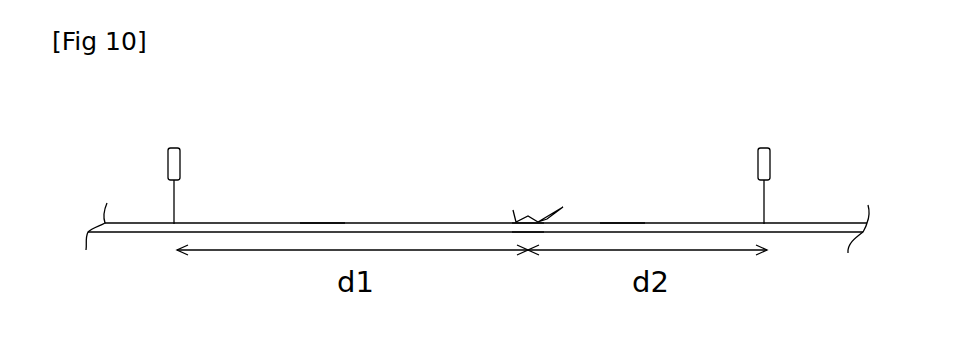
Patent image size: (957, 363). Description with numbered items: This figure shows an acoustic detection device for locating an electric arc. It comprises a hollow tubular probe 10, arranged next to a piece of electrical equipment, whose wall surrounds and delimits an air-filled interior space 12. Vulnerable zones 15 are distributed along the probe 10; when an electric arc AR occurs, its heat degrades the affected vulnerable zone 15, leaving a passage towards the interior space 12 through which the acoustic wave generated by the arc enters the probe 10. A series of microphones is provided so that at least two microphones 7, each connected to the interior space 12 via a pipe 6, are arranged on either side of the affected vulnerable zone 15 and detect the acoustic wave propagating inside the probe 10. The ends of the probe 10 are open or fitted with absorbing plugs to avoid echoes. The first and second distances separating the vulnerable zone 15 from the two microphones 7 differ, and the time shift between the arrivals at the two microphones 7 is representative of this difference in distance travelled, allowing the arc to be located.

The tubular probe 10 is at (434, 207).
The microphone 7 is at (181, 165).
The pipe 6 is at (175, 201).
The interior space 12 is at (322, 225).
The electric arc AR is at (529, 209).
The vulnerable zone 15 is at (528, 233).